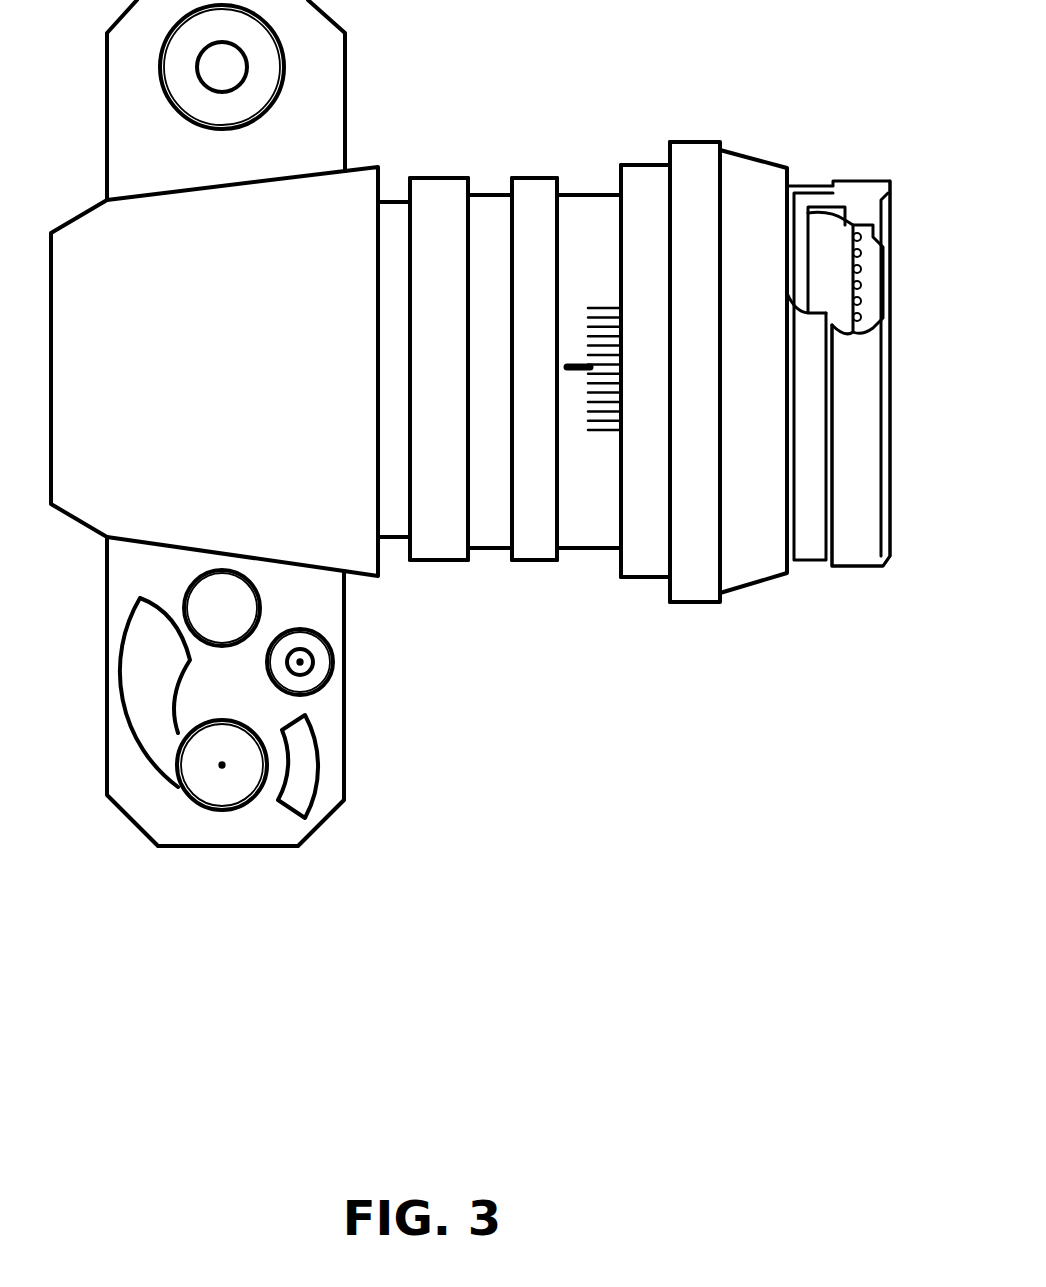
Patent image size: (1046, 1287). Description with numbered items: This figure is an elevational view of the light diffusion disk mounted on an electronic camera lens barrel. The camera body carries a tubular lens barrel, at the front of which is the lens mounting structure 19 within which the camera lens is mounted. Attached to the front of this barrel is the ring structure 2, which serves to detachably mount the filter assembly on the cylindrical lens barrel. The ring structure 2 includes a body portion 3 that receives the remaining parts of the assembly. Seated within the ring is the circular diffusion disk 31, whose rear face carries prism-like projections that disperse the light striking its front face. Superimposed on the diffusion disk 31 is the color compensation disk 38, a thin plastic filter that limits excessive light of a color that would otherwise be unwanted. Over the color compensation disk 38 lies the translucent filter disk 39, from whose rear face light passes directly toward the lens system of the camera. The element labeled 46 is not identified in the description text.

The lens mounting structure 19 is at (647, 130).
The ring structure 2 is at (820, 602).
The mount ring 46 is at (810, 186).
The body portion 3 is at (852, 490).
The translucent filter disk 39 is at (815, 258).
The color compensation disk 38 is at (853, 222).
The diffusion disk 31 is at (870, 272).